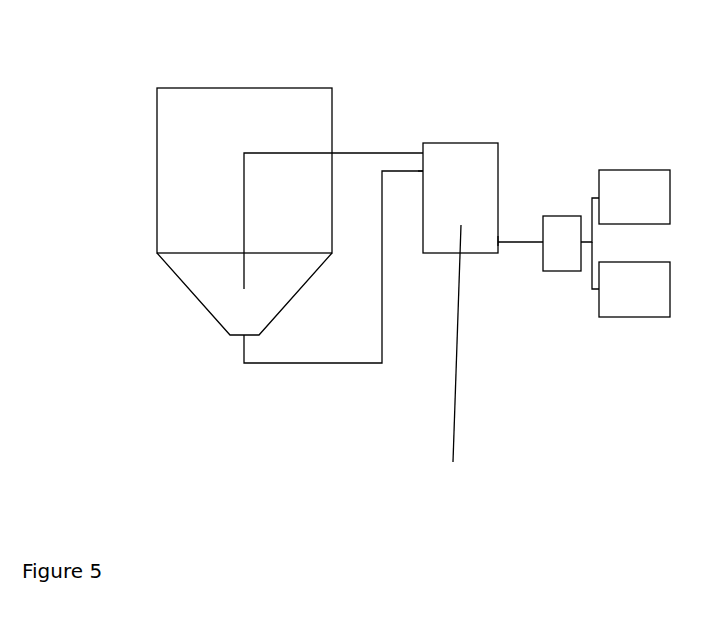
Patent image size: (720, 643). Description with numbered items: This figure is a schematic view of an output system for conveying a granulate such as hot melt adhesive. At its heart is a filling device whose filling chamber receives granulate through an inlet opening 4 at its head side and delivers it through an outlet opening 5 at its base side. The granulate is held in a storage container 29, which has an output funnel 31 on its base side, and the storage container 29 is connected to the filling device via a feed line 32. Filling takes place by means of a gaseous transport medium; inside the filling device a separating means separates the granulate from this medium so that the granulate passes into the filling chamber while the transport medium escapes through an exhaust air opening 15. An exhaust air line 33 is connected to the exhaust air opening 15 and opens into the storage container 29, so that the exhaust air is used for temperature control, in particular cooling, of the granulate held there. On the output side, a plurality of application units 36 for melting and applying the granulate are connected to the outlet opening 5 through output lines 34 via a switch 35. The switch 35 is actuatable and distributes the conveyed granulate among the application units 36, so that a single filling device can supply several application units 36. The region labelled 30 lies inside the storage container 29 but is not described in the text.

The inlet opening 4 is at (425, 168).
The outlet opening 5 is at (498, 240).
The exhaust air opening 15 is at (425, 170).
The storage container 29 is at (176, 87).
The separation chamber 30 is at (185, 162).
The output funnel 31 is at (221, 299).
The feed line 32 is at (342, 362).
The exhaust air line 33 is at (352, 152).
The output line 34 is at (515, 245).
The switch 35 is at (552, 233).
The application unit 36 is at (628, 195).